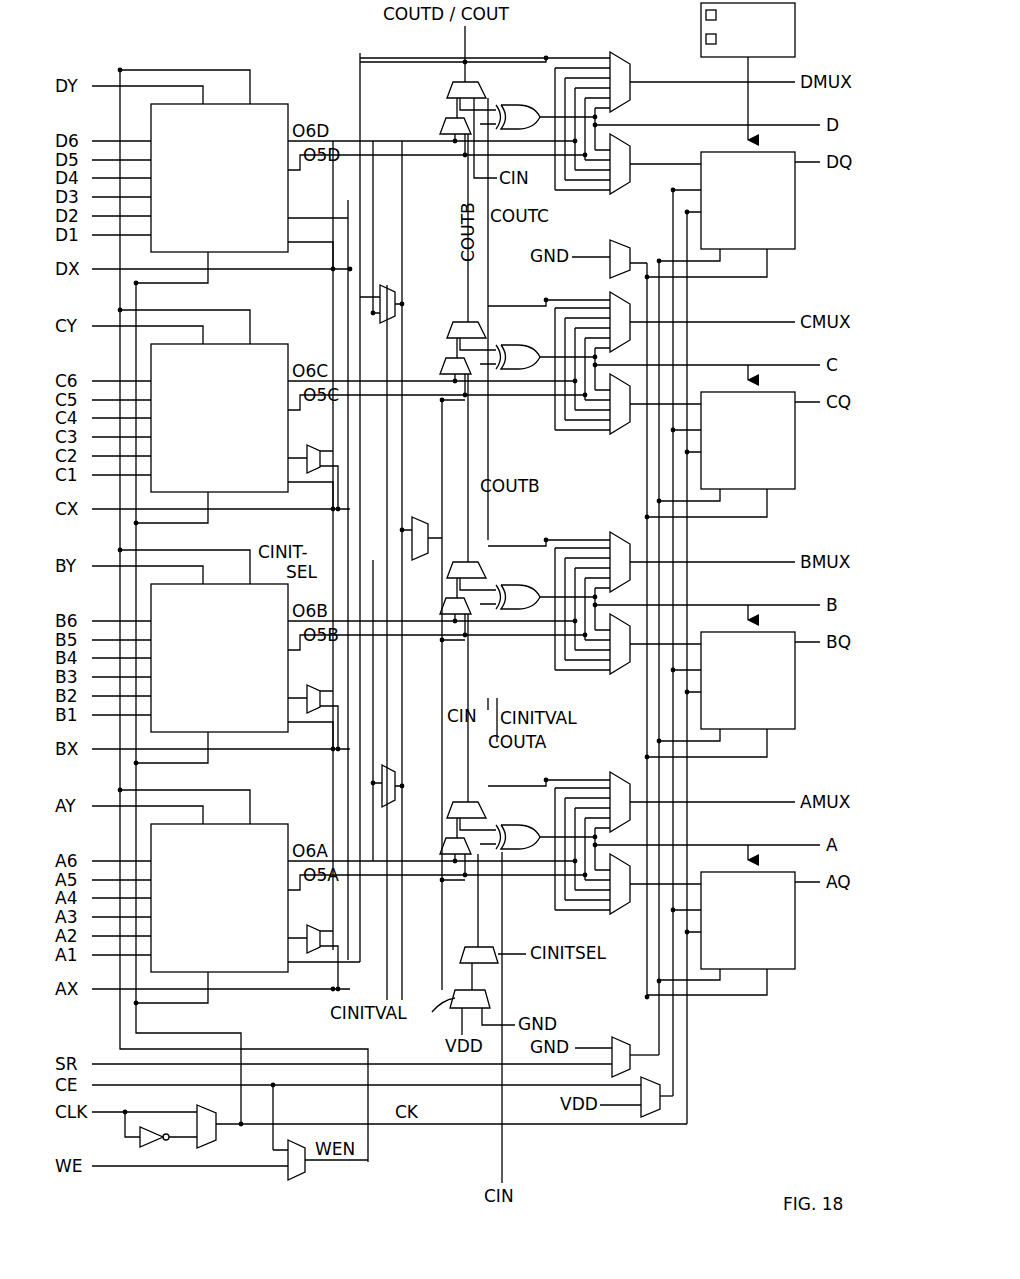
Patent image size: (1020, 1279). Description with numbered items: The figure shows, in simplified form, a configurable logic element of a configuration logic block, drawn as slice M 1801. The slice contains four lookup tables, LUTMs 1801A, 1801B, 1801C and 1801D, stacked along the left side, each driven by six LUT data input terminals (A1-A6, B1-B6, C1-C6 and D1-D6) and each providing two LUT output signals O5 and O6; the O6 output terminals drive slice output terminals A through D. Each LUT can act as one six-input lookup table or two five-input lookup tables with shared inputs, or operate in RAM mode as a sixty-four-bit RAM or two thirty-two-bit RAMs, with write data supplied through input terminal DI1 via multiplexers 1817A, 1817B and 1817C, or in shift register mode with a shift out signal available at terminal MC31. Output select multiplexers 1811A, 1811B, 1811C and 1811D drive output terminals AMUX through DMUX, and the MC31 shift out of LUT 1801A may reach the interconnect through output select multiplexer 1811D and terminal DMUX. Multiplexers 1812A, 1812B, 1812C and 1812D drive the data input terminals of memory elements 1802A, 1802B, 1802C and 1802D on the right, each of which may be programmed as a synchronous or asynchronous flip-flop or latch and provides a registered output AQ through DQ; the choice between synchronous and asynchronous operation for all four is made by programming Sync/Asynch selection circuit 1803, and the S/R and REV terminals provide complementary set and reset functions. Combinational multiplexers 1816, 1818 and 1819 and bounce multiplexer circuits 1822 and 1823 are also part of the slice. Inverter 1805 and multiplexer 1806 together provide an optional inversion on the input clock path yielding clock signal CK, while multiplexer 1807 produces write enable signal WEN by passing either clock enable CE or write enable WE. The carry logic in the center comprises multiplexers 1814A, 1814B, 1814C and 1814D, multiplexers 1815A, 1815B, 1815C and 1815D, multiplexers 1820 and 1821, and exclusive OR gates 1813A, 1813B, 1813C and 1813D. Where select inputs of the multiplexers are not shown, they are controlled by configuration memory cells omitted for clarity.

The slice M 1801 is at (196, 56).
The lookup table (LUTM) D 1801D is at (219, 178).
The lookup table (LUTM) C 1801C is at (219, 418).
The lookup table (LUTM) B 1801B is at (219, 658).
The lookup table (LUTM) A 1801A is at (219, 898).
The memory element D 1802D is at (748, 200).
The memory element C 1802C is at (748, 440).
The memory element B 1802B is at (748, 680).
The memory element A 1802A is at (748, 920).
The Sync/Asynch selection circuit 1803 is at (701, 42).
The inverter 1805 is at (148, 1147).
The multiplexer 1806 is at (216, 1137).
The multiplexer 1807 is at (292, 1180).
The output select multiplexer D 1811D is at (630, 88).
The output select multiplexer C 1811C is at (587, 312).
The output select multiplexer B 1811B is at (587, 552).
The output select multiplexer A 1811A is at (587, 792).
The multiplexer 1812D is at (630, 148).
The multiplexer 1812C is at (587, 415).
The multiplexer 1812B is at (587, 655).
The multiplexer 1812A is at (587, 895).
The exclusive OR gate 1813D is at (536, 100).
The exclusive OR gate 1813C is at (517, 345).
The exclusive OR gate 1813B is at (517, 585).
The exclusive OR gate 1813A is at (517, 825).
The carry logic multiplexer 1814D is at (460, 82).
The carry logic multiplexer 1814C is at (455, 305).
The carry logic multiplexer 1814B is at (455, 545).
The carry logic multiplexer 1814A is at (449, 785).
The carry logic multiplexer 1815D is at (445, 134).
The carry logic multiplexer 1815C is at (491, 390).
The carry logic multiplexer 1815B is at (491, 630).
The carry logic multiplexer 1815A is at (490, 872).
The combinational multiplexer 1816 is at (383, 285).
The multiplexer 1817C is at (280, 488).
The multiplexer 1817B is at (280, 728).
The multiplexer 1817A is at (280, 968).
The combinational multiplexer 1818 is at (395, 538).
The combinational multiplexer 1819 is at (401, 804).
The carry logic multiplexer 1820 is at (490, 998).
The carry logic multiplexer 1821 is at (612, 240).
The bounce multiplexer circuit 1822 is at (622, 1028).
The bounce multiplexer circuit 1823 is at (646, 1117).